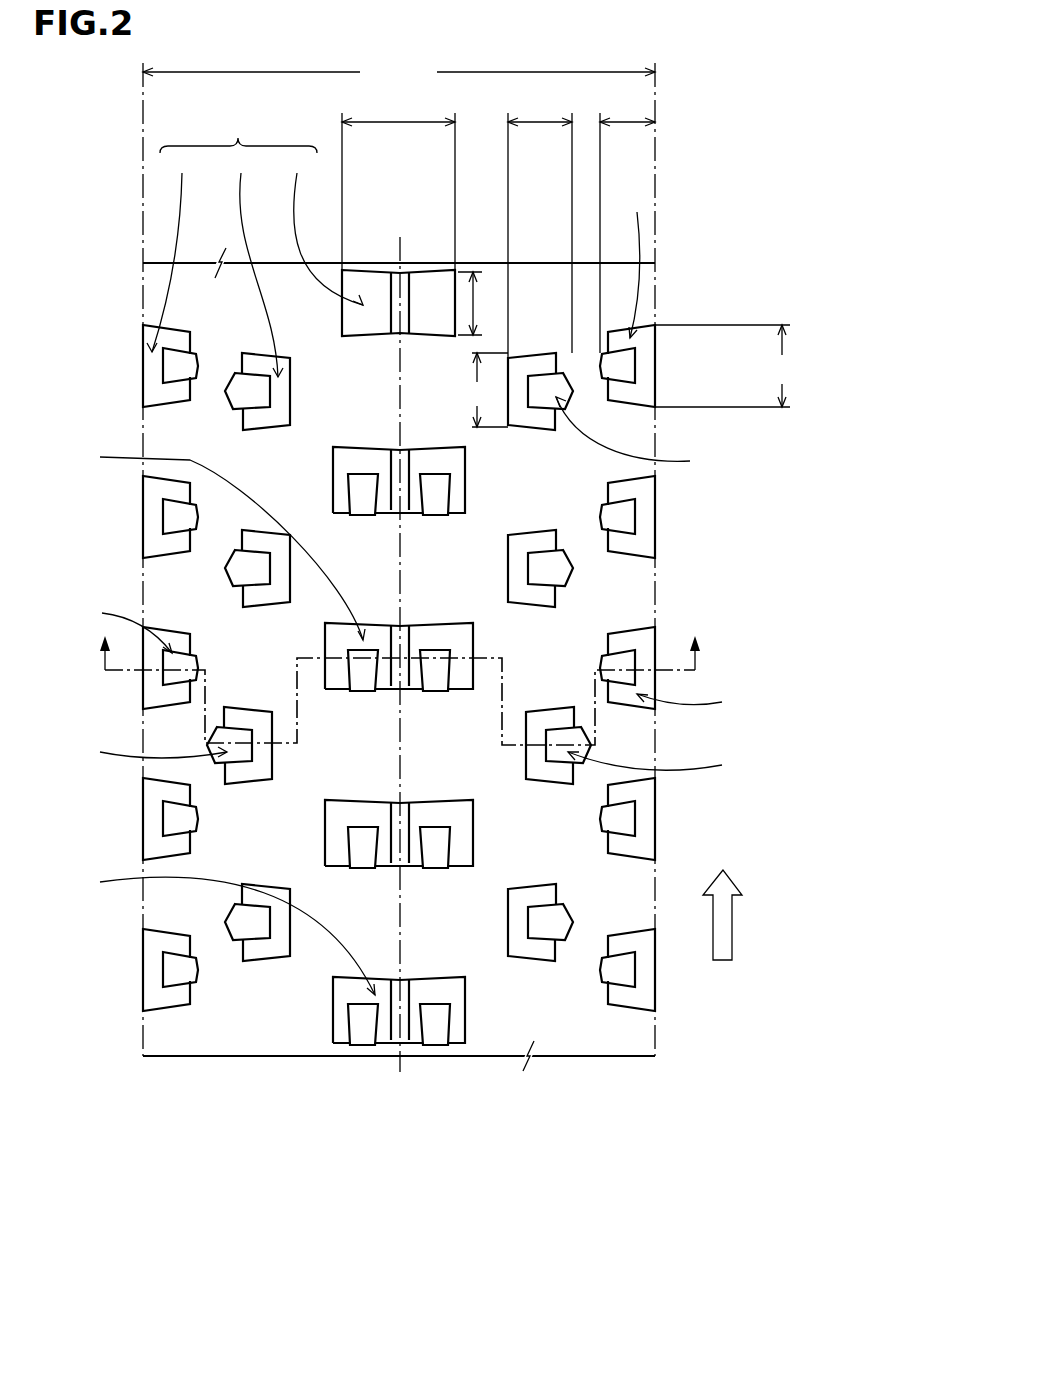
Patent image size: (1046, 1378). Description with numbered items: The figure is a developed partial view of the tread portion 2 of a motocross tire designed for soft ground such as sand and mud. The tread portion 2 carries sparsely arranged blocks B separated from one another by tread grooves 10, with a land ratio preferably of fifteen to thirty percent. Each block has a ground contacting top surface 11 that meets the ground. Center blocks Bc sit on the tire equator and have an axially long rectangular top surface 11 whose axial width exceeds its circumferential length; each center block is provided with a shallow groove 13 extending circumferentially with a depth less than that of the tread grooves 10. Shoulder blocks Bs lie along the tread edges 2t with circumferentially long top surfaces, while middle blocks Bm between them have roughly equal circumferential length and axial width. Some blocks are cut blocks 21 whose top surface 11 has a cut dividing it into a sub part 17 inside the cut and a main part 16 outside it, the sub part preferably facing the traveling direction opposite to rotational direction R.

The tread portion 2 is at (688, 215).
The tread edges 2t is at (143, 150).
The tread grooves 10 is at (607, 583).
The ground contacting top surface 11 is at (435, 673).
The shallow groove 13 is at (397, 290).
The main part 16 is at (153, 952).
The sub part 17 is at (178, 975).
The cut block 21 is at (432, 692).